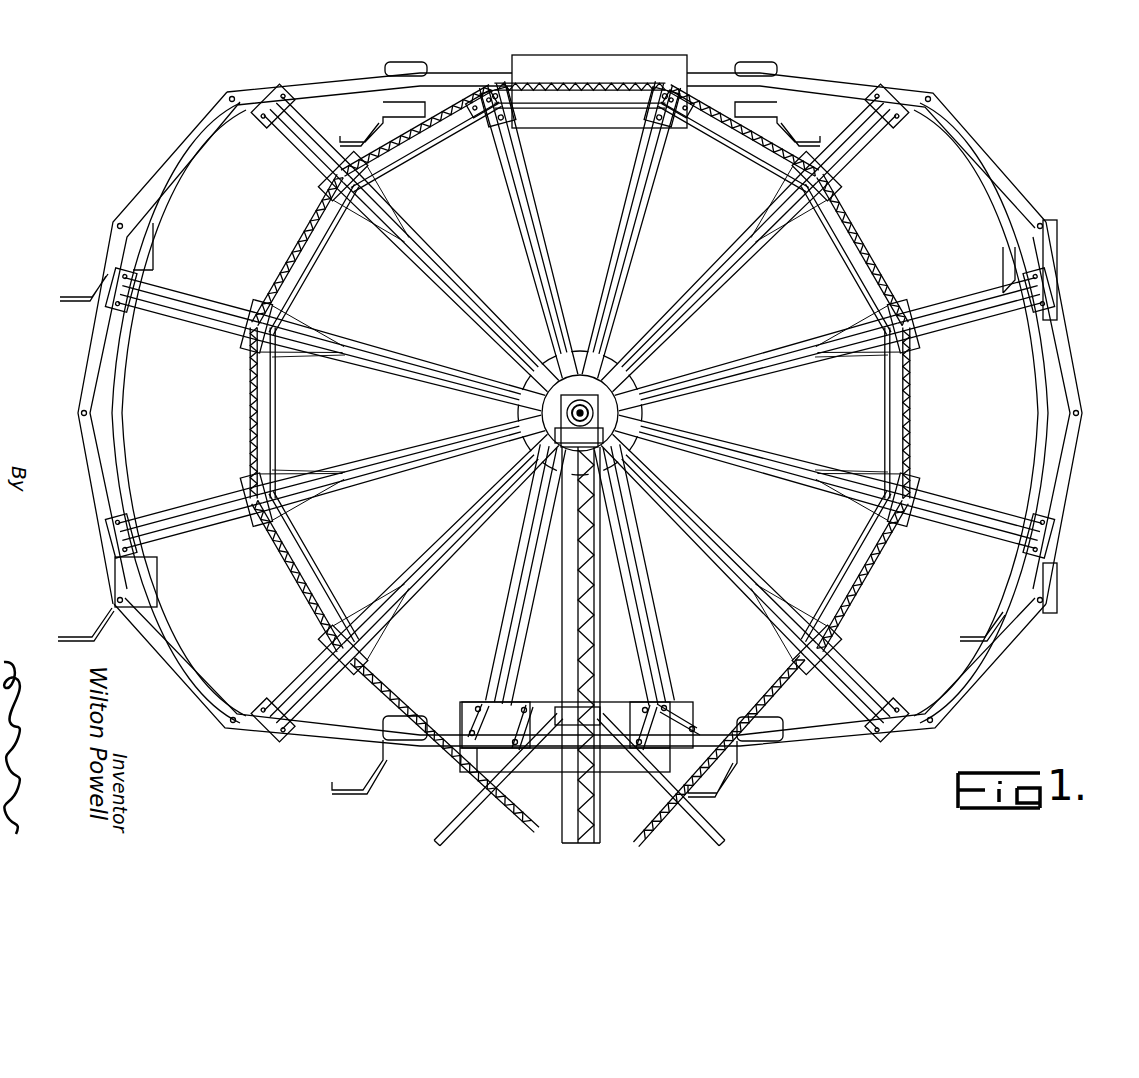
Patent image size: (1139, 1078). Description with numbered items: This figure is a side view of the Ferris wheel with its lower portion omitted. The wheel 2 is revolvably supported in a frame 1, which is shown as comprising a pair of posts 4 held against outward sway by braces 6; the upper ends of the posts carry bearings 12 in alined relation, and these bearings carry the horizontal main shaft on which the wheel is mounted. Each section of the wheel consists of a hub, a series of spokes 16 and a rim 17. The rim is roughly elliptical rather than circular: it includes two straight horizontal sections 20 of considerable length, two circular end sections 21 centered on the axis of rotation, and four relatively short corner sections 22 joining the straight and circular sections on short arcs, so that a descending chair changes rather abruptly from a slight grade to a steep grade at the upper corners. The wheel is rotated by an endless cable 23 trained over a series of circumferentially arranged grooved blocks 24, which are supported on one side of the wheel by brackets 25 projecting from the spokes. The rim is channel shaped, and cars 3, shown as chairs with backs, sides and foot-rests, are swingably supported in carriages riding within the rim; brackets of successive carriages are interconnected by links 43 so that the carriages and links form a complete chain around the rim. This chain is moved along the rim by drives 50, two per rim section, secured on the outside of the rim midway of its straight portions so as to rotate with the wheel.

The frame 1 is at (749, 831).
The wheel 2 is at (59, 386).
The car 3 is at (1010, 257).
The post 4 is at (600, 578).
The brace 6 is at (565, 538).
The bearing 12 is at (593, 413).
The spoke 16 is at (372, 350).
The rim 17 is at (1043, 345).
The straight horizontal section 20 is at (805, 103).
The circular end section 21 is at (113, 420).
The corner section 22 is at (206, 142).
The endless cable 23 is at (870, 247).
The grooved block 24 is at (908, 307).
The bracket 25 is at (856, 358).
The link 43 is at (968, 130).
The drive 50 is at (595, 100).